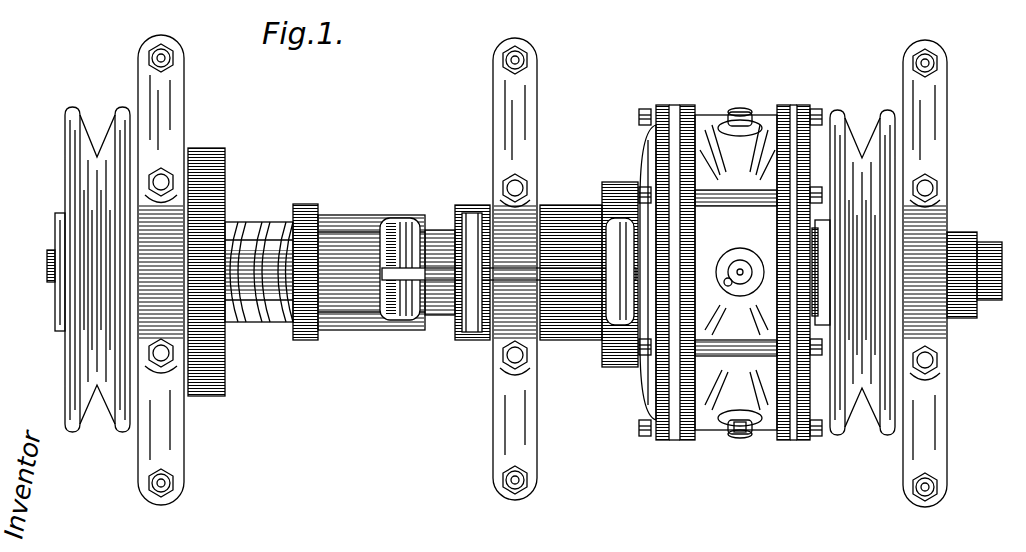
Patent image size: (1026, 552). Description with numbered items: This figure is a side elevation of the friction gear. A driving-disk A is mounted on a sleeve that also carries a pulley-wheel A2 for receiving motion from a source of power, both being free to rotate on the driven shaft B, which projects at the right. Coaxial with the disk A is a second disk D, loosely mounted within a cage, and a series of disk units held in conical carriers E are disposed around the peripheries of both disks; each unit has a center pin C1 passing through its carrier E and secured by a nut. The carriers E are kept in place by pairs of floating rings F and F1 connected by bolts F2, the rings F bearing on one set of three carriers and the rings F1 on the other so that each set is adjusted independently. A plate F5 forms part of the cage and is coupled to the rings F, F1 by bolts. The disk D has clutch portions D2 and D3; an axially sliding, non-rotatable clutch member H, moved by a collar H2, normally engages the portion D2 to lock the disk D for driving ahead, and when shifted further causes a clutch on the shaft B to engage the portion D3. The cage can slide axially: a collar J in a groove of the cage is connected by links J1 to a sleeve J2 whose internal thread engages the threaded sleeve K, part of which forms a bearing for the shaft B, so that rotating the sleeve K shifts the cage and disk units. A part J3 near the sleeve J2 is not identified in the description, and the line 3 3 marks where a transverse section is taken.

The driving-disk A is at (88, 269).
The pulley-wheel A2 is at (850, 150).
The driven shaft B is at (984, 300).
The center pin C1 is at (730, 432).
The disk D is at (161, 270).
The clutch portion of disk D D2 is at (515, 269).
The clutch portion of disk D D3 is at (925, 273).
The conical carrier E is at (742, 220).
The floating rings F is at (662, 418).
The floating rings F1 is at (802, 135).
The bolts F2 is at (820, 340).
The plate F5 is at (645, 165).
The clutch member H is at (442, 262).
The collar H2 is at (470, 316).
The collar J is at (624, 345).
The links J1 is at (478, 270).
The sleeve J2 is at (345, 256).
The bearing block J3 is at (428, 252).
The sleeve K is at (255, 238).
The section line 3 is at (740, 112).